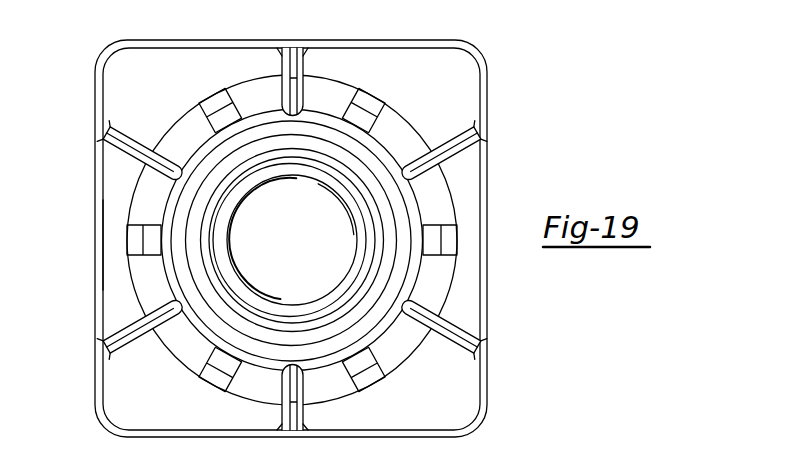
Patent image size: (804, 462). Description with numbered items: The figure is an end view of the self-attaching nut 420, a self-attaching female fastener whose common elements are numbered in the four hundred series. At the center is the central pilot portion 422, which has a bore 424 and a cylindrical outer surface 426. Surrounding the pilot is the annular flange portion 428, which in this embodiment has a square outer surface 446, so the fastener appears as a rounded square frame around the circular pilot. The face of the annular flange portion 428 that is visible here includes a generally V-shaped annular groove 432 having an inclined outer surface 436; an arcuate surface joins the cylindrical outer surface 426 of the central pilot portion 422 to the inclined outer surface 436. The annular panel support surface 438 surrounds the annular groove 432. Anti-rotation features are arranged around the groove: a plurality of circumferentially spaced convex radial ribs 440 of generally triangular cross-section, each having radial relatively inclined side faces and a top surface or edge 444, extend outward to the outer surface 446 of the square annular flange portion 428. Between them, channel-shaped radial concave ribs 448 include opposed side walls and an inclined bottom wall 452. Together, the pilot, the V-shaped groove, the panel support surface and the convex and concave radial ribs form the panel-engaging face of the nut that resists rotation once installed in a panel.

The self-attaching nut 420 is at (337, 218).
The central pilot portion 422 is at (402, 212).
The bore 424 is at (357, 248).
The cylindrical outer surface 426 is at (403, 276).
The annular flange portion 428 is at (490, 346).
The V-shaped annular groove 432 is at (247, 107).
The inclined outer surface 436 is at (323, 93).
The annular panel support surface 438 is at (423, 403).
The convex radial ribs 440 is at (481, 127).
The top surface or edge 444 is at (133, 147).
The square outer surface 446 is at (104, 248).
The channel-shaped radial concave ribs 448 is at (440, 238).
The inclined bottom wall 452 is at (362, 112).